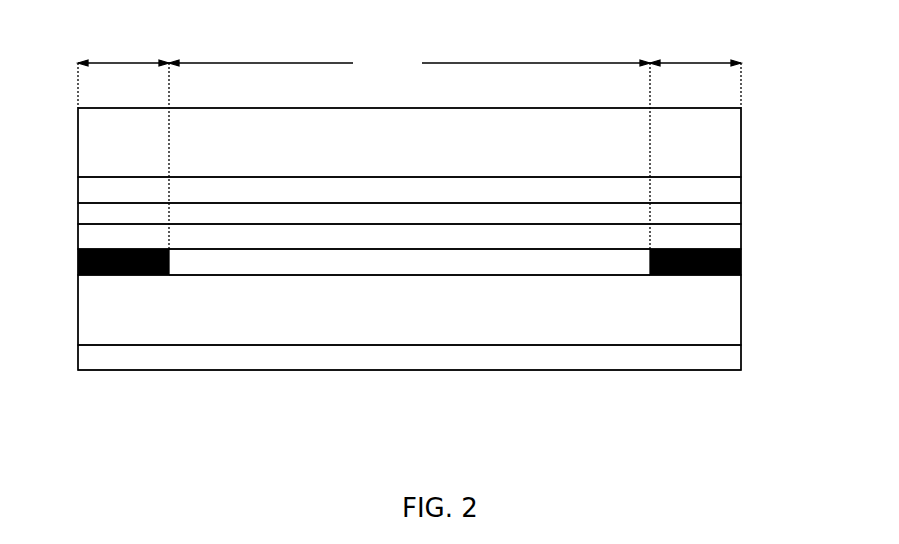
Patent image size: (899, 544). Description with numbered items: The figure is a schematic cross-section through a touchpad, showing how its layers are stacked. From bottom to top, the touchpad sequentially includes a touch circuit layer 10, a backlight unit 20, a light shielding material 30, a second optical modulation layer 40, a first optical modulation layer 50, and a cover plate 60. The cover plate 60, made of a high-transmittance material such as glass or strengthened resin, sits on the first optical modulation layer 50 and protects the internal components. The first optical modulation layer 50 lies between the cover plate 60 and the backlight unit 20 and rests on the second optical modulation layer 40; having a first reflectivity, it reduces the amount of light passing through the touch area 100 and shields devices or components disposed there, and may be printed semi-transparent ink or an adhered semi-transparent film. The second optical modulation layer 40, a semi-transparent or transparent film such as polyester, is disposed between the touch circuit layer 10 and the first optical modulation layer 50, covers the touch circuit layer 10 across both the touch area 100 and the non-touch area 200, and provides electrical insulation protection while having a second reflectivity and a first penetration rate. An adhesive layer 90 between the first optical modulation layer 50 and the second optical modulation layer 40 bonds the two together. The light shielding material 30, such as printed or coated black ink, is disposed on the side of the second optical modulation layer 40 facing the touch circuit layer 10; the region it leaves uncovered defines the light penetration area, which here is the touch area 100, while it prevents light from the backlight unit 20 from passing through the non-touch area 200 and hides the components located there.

The touch circuit layer 10 is at (742, 358).
The backlight unit 20 is at (77, 335).
The light shielding material 30 is at (742, 262).
The second optical modulation layer 40 is at (77, 239).
The first optical modulation layer 50 is at (742, 187).
The cover plate 60 is at (77, 144).
The adhesive layer 90 is at (742, 214).
The touch area 100 is at (409, 65).
The non-touch area 200 is at (409, 137).